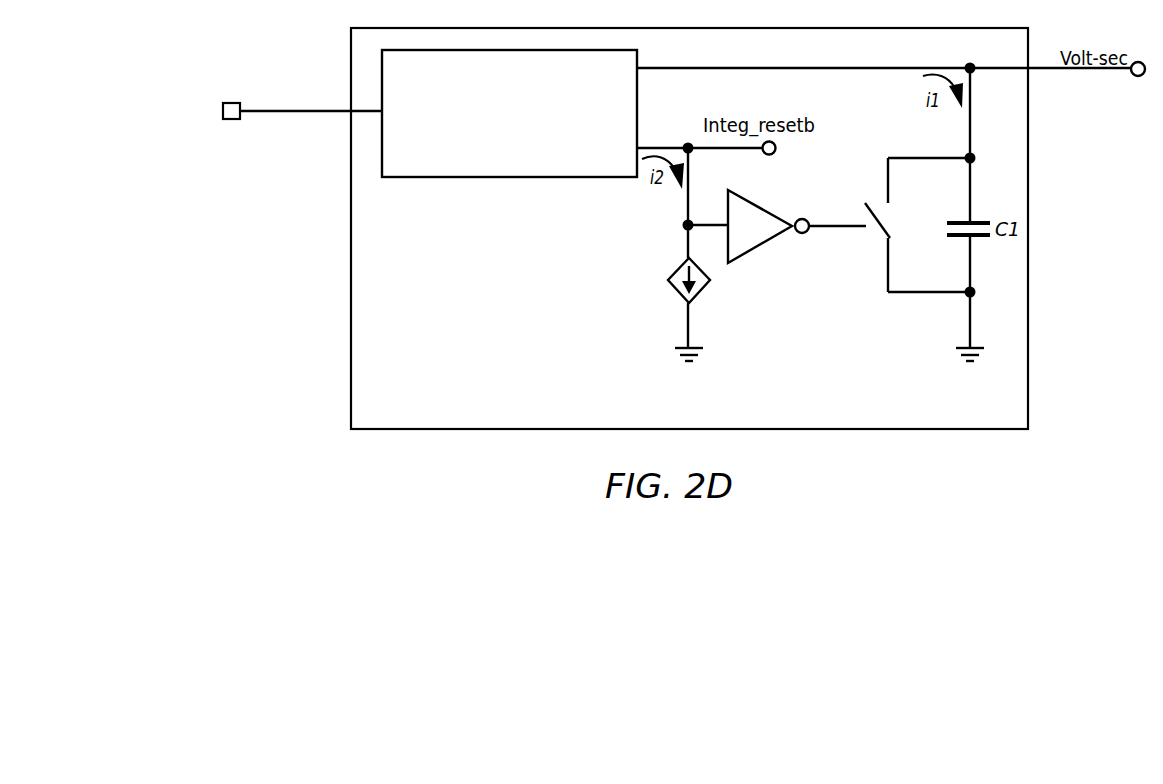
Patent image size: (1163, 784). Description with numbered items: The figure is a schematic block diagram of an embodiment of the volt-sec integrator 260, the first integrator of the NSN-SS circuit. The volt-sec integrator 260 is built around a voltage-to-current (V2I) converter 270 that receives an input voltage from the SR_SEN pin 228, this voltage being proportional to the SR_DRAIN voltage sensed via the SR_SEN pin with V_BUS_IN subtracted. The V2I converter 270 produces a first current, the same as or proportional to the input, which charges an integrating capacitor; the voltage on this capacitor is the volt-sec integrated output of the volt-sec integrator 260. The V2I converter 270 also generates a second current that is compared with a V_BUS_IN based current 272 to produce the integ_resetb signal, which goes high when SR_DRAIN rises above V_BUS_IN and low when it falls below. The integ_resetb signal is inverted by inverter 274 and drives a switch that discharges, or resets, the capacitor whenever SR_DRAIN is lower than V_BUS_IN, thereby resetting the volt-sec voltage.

The SR-SEN pin 228 is at (222, 103).
The volt-sec integrator 260 is at (689, 228).
The voltage-to-current (V2I) converter 270 is at (509, 113).
The V_BUS_IN based current 272 is at (668, 280).
The inverter 274 is at (771, 212).